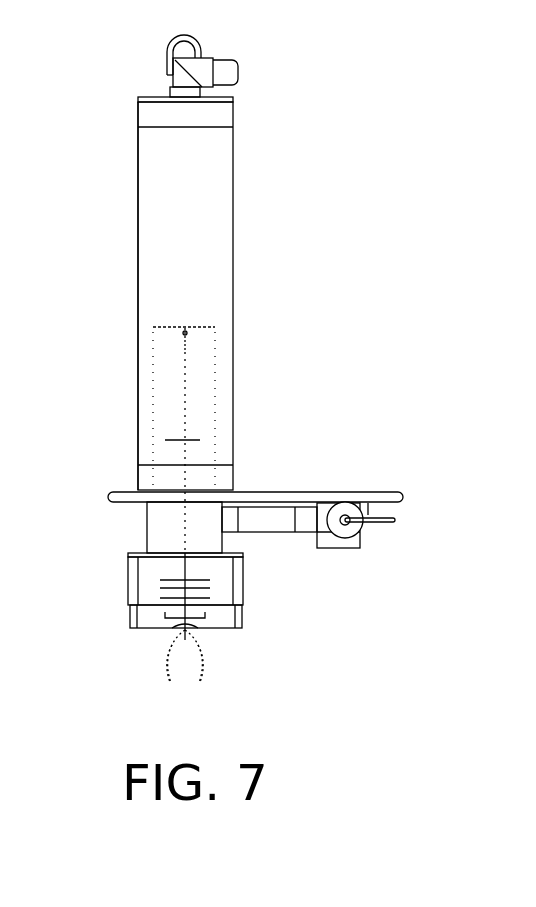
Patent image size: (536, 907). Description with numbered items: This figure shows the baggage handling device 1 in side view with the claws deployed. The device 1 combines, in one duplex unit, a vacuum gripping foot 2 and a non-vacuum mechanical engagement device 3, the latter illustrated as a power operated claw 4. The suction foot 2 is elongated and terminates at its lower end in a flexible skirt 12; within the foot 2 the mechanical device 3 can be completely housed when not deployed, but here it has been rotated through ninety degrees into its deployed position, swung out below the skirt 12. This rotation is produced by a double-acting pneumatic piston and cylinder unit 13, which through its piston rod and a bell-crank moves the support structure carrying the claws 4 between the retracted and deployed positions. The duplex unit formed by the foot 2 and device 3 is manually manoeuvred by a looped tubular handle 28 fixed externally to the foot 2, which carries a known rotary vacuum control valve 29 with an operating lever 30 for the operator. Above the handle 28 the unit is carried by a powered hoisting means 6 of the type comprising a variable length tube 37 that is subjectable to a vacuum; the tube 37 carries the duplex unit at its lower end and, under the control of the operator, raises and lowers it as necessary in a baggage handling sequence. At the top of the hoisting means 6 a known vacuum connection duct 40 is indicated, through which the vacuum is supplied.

The baggage handling device 1 is at (275, 470).
The vacuum gripping foot 2 is at (245, 593).
The mechanical engagement device 3 is at (214, 663).
The power operated claw 4 is at (193, 685).
The powered hoisting means 6 is at (237, 190).
The flexible skirt 12 is at (127, 613).
The double-acting pneumatic piston and cylinder unit 13 is at (204, 382).
The looped tubular handle 28 is at (108, 488).
The rotary vacuum control valve 29 is at (359, 499).
The operating lever 30 is at (393, 526).
The variable length tube 37 is at (135, 232).
The vacuum connection duct 40 is at (228, 74).